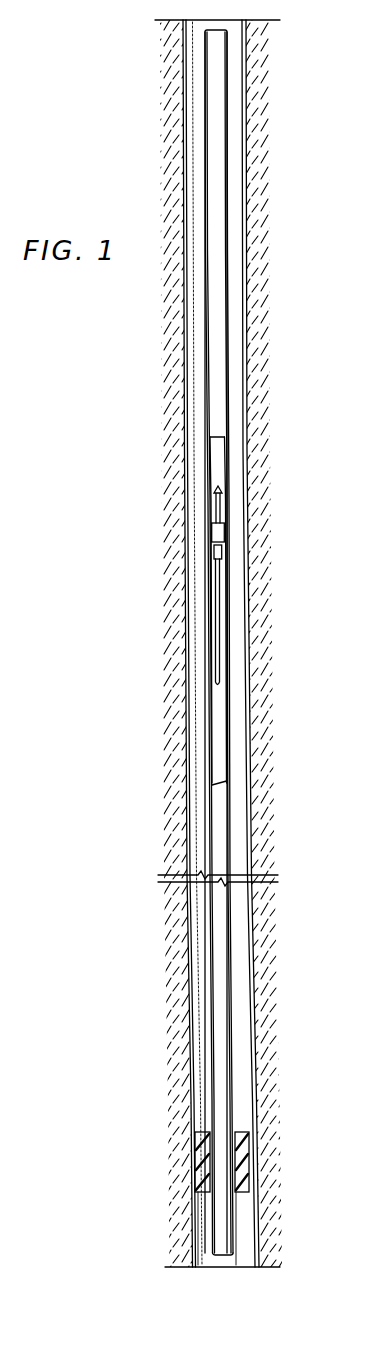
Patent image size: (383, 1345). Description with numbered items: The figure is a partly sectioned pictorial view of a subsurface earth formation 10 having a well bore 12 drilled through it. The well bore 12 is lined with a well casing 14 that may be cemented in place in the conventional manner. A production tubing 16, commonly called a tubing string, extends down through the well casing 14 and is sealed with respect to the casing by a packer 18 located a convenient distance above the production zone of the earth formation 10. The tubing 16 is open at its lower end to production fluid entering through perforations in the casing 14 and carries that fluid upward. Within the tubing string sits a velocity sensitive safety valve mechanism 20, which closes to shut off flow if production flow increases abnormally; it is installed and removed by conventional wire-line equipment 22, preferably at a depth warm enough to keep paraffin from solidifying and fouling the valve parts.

The earth formation 10 is at (252, 112).
The well bore 12 is at (243, 190).
The well casing 14 is at (243, 277).
The production tubing 16 is at (218, 393).
The packer 18 is at (248, 1140).
The velocity sensitive safety valve mechanism 20 is at (217, 617).
The wire-line equipment 22 is at (217, 533).